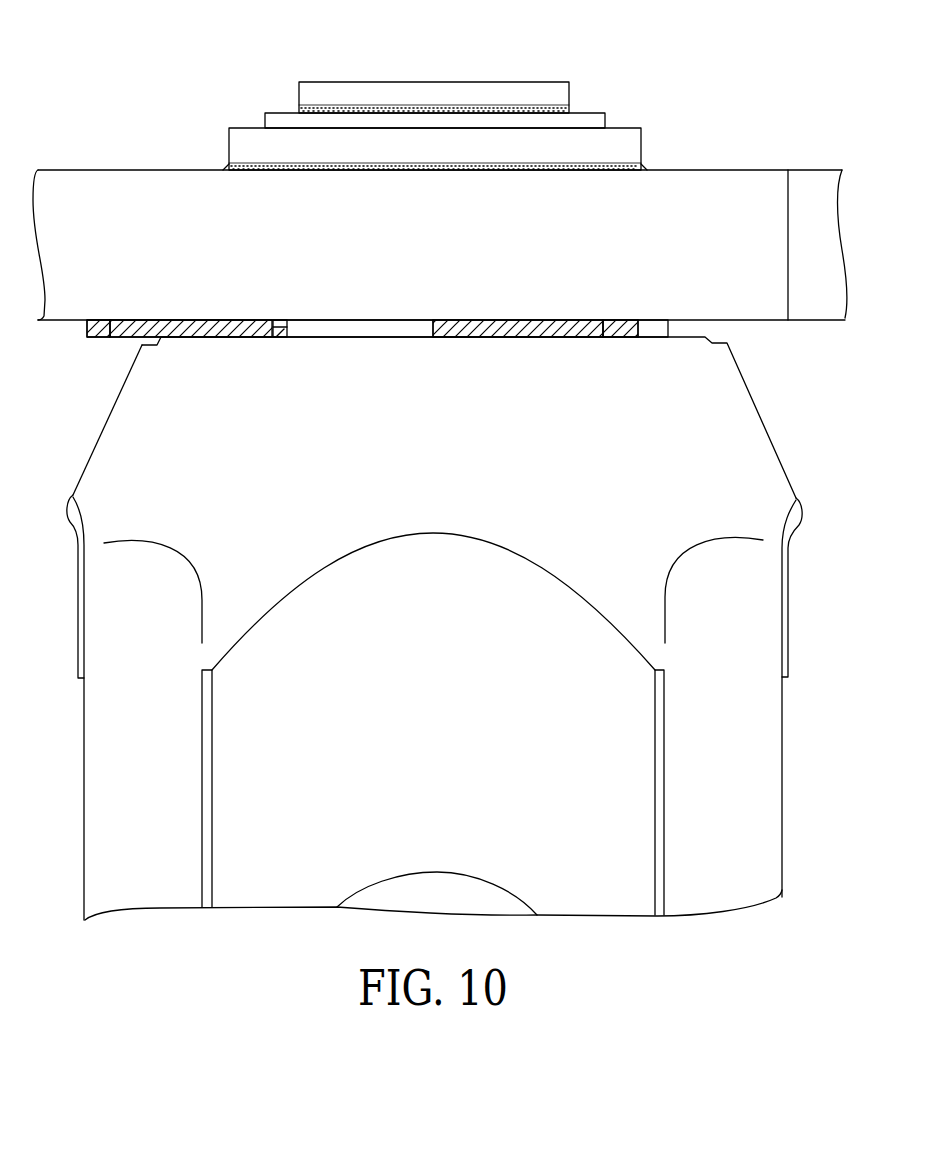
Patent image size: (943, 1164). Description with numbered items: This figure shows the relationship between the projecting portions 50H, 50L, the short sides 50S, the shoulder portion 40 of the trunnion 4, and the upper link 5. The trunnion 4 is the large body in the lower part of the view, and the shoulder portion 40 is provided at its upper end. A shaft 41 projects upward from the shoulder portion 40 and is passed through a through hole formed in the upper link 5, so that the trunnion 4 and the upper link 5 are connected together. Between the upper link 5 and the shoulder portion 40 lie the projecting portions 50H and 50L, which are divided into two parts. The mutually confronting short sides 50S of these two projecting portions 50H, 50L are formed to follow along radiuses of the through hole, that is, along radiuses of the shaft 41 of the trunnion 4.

The shaft 41 is at (444, 81).
The upper link 5 is at (722, 190).
The shoulder portion 40 is at (377, 297).
The projecting portion 50H is at (180, 326).
The short side 50S is at (278, 322).
The projecting portion 50L is at (527, 326).
The trunnion 4 is at (752, 454).